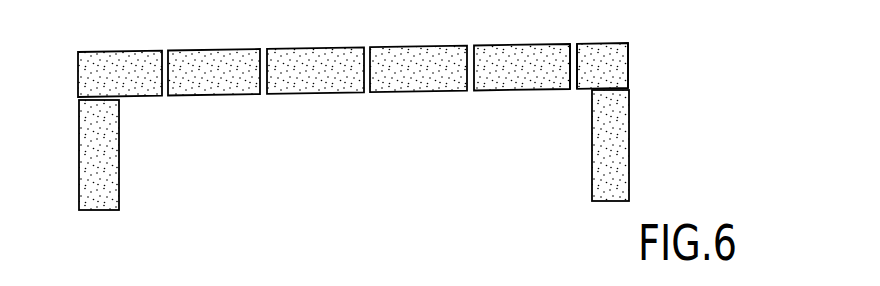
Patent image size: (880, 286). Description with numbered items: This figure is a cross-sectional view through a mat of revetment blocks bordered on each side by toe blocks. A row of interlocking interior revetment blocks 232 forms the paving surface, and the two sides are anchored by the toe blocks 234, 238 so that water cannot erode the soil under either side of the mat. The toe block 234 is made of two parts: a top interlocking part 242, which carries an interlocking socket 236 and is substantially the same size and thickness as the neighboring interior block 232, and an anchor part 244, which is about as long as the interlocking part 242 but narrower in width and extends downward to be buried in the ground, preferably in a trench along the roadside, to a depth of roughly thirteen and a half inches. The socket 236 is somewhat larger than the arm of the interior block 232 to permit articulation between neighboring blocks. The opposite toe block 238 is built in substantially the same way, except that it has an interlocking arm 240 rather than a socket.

The interior revetment block 232 is at (418, 47).
The toe block 234 is at (616, 31).
The interlocking socket 236 is at (572, 60).
The toe block 238 is at (70, 72).
The interlocking arm 240 is at (145, 52).
The top interlocking part 242 is at (630, 62).
The anchor part 244 is at (630, 165).